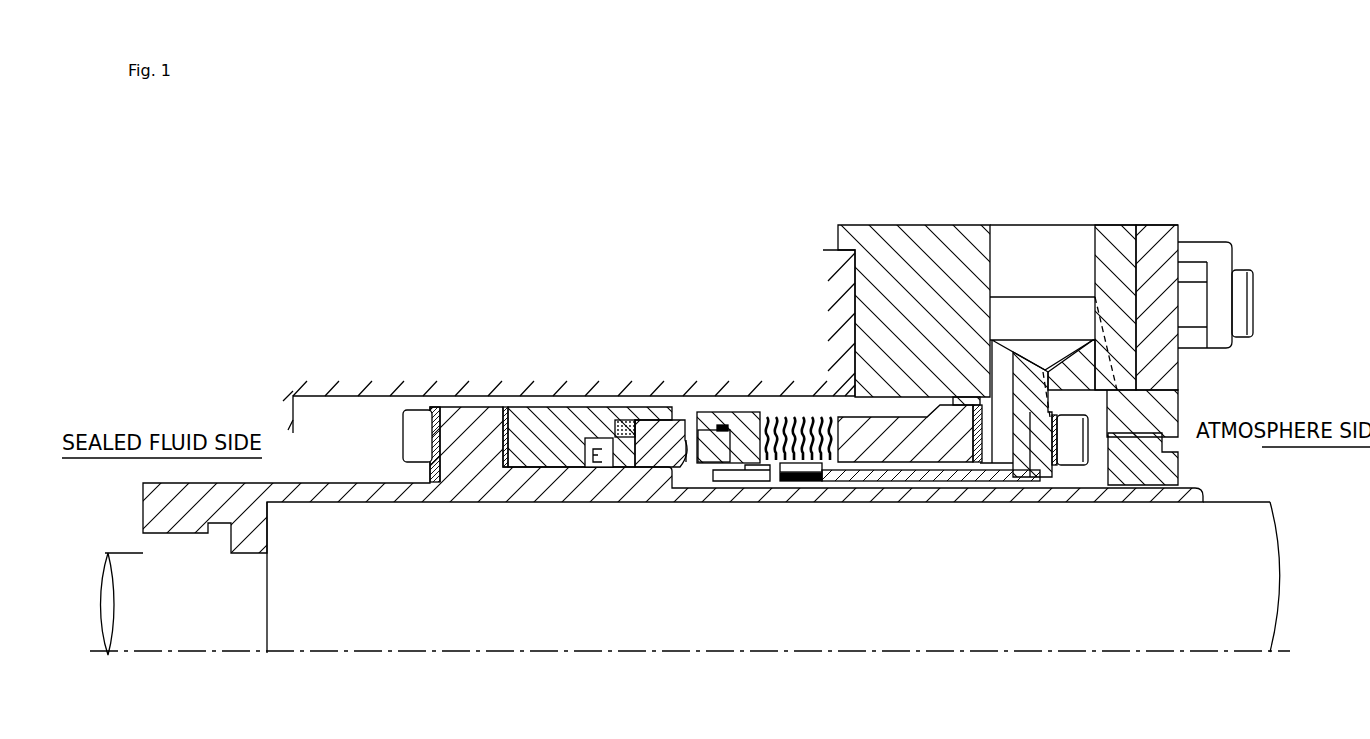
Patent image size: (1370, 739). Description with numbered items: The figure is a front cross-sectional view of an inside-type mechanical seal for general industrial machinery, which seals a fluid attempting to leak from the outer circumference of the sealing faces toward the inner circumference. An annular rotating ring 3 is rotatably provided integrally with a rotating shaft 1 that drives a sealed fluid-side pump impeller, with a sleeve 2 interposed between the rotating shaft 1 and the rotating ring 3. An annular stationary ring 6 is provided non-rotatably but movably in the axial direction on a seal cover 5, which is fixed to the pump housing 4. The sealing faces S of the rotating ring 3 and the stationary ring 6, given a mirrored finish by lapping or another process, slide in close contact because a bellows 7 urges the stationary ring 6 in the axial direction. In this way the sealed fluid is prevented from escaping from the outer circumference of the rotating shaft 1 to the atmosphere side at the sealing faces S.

The rotating shaft 1 is at (372, 613).
The sleeve 2 is at (970, 495).
The rotating ring 3 is at (641, 407).
The pump housing 4 is at (552, 338).
The seal cover 5 is at (888, 226).
The stationary ring 6 is at (698, 414).
The bellows 7 is at (778, 415).
The sealing faces S is at (690, 438).